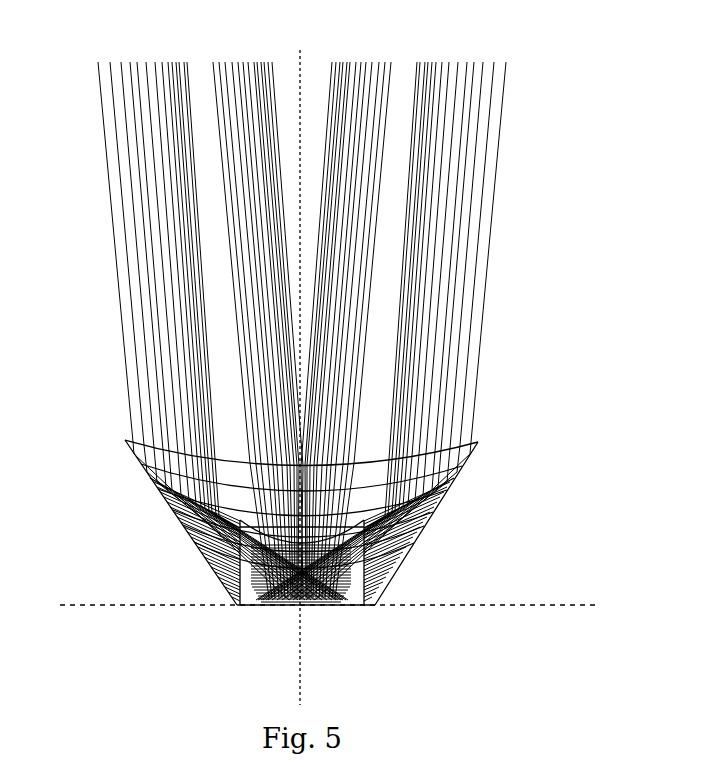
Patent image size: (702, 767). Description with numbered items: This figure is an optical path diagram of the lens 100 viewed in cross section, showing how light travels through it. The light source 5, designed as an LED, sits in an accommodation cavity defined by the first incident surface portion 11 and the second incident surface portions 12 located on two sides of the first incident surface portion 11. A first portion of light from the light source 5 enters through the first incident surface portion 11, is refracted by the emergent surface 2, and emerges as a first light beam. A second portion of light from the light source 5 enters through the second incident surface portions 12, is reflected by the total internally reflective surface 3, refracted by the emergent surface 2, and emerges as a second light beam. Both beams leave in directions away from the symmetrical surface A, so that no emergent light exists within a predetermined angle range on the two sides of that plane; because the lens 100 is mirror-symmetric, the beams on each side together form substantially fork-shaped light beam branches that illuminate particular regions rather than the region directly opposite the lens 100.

The lens 100 is at (179, 27).
The emergent surface 2 is at (417, 443).
The reflective surface 3 is at (437, 508).
The first incident surface portion 11 is at (365, 568).
The second incident surface portions 12 is at (250, 588).
The light source 5 is at (328, 605).